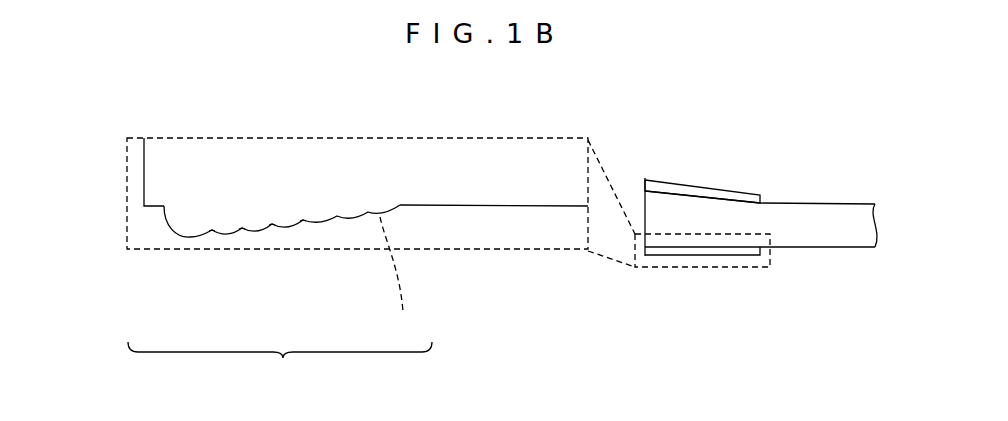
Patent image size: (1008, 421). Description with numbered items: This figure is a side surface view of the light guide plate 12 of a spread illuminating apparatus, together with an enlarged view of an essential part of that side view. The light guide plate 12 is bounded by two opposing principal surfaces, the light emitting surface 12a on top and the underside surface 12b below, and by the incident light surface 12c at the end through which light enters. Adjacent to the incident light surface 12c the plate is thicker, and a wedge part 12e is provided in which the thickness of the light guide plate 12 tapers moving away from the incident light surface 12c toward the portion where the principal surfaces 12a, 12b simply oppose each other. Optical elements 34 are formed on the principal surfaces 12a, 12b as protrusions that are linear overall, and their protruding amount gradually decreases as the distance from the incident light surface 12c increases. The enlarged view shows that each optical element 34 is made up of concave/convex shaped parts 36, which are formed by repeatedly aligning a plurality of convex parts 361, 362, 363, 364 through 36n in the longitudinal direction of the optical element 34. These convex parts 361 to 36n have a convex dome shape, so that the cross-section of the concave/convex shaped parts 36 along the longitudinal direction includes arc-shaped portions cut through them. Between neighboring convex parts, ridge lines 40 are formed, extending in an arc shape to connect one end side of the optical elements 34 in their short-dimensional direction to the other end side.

The light guide plate 12 is at (813, 169).
The light emitting surface 12a is at (840, 204).
The underside surface 12b is at (535, 207).
The incident light surface 12c is at (143, 168).
The wedge part 12e is at (735, 198).
The optical elements 34 is at (151, 235).
The concave/convex shaped parts 36 is at (280, 296).
The convex part 361 is at (187, 237).
The convex part 362 is at (227, 235).
The convex part 363 is at (257, 232).
The convex part 364 is at (287, 228).
The convex part 36n is at (401, 279).
The ridge lines 40 is at (212, 230).